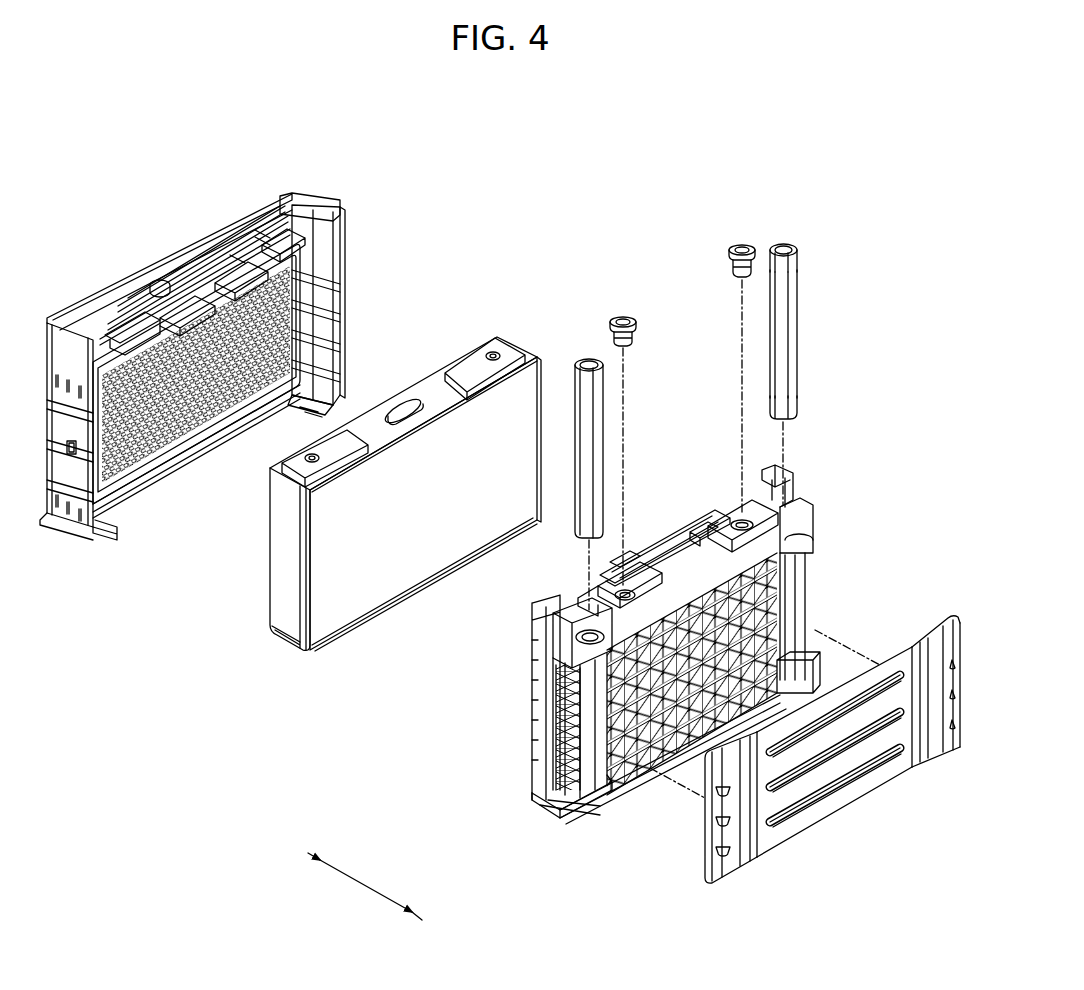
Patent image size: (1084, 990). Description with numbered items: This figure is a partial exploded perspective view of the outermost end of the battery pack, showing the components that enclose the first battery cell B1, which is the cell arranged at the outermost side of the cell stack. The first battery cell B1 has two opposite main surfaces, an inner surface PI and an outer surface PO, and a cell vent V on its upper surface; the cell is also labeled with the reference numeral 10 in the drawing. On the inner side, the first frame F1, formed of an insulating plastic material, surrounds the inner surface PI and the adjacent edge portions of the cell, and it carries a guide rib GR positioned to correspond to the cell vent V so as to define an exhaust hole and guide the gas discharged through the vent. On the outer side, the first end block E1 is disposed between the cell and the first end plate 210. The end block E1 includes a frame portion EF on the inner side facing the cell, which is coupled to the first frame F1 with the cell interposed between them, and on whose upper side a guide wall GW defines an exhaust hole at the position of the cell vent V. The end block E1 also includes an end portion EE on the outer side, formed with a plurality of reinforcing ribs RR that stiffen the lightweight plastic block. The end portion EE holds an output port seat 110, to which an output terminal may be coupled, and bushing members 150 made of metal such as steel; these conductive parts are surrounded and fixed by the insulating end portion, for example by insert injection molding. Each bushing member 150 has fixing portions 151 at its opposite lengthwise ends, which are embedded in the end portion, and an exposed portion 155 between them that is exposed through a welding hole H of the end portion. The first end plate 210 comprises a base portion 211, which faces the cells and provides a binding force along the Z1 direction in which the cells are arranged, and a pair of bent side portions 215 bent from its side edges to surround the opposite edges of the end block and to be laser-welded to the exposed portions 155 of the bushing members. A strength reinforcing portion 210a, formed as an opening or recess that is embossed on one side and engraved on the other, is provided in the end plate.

The first frame F1 is at (362, 198).
The guide rib GR is at (214, 290).
The battery cell 10 is at (477, 350).
The cell vent V is at (400, 408).
The inner surface PI is at (266, 550).
The outer surface PO is at (401, 573).
The first battery cell B1 is at (275, 658).
The Z1 direction Z1 is at (365, 886).
The bushing member 150 is at (581, 360).
The fixing portions 151 is at (797, 251).
The exposed portion 155 is at (797, 331).
The output port seat 110 is at (738, 242).
The guide wall GW is at (663, 540).
The welding hole H is at (792, 576).
The reinforcing ribs RR is at (755, 628).
The frame portion EF is at (545, 790).
The end portion EE is at (580, 820).
The first end block E1 is at (472, 850).
The first end plate 210 is at (700, 894).
The strength reinforcing portion 210a is at (873, 762).
The base portion 211 is at (822, 817).
The bent side portions 215 is at (740, 873).